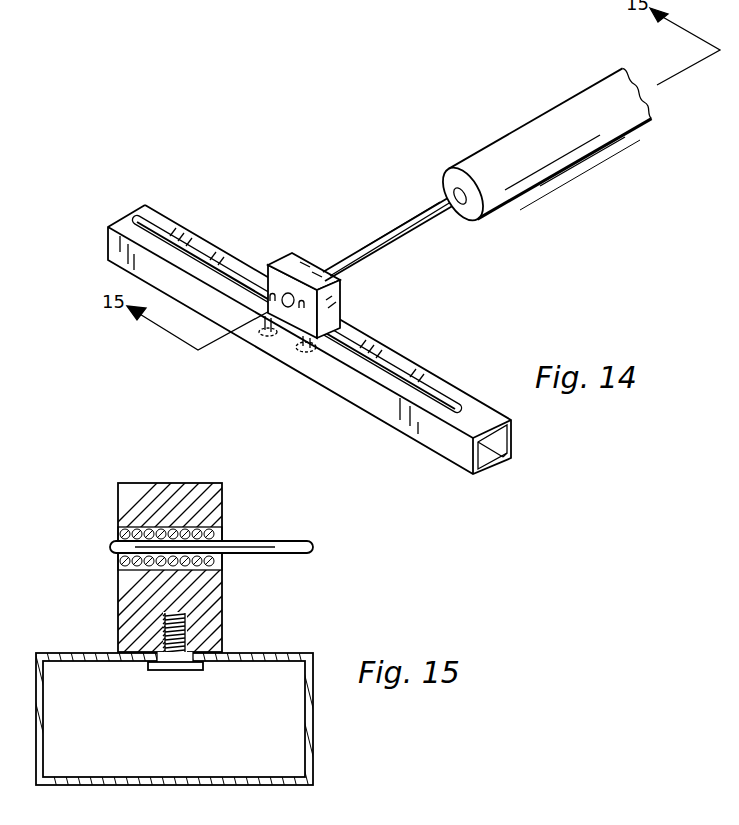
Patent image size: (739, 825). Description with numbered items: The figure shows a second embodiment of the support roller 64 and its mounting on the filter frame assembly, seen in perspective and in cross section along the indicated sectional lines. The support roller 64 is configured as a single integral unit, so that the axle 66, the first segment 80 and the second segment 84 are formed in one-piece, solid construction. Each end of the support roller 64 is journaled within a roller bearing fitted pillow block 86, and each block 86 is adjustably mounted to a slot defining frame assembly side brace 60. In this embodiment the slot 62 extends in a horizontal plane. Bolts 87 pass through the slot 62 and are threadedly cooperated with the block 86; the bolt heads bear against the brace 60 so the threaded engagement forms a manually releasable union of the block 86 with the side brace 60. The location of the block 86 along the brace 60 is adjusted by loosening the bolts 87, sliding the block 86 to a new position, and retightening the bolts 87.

In FIG. 14, the side brace 60 is at (455, 445).
In FIG. 15, the side brace 60 is at (308, 655).
In FIG. 14, the slot 62 is at (440, 388).
In FIG. 15, the slot 62 is at (188, 650).
In FIG. 14, the support roller 64 is at (428, 213).
In FIG. 15, the support roller 64 is at (298, 541).
In FIG. 14, the axle 66 is at (382, 245).
In FIG. 14, the first segment 80 is at (582, 160).
In FIG. 14, the second segment 84 is at (400, 226).
In FIG. 14, the pillow block 86 is at (340, 288).
In FIG. 15, the pillow block 86 is at (170, 483).
In FIG. 14, the bolts 87 is at (268, 338).
In FIG. 15, the bolts 87 is at (180, 671).